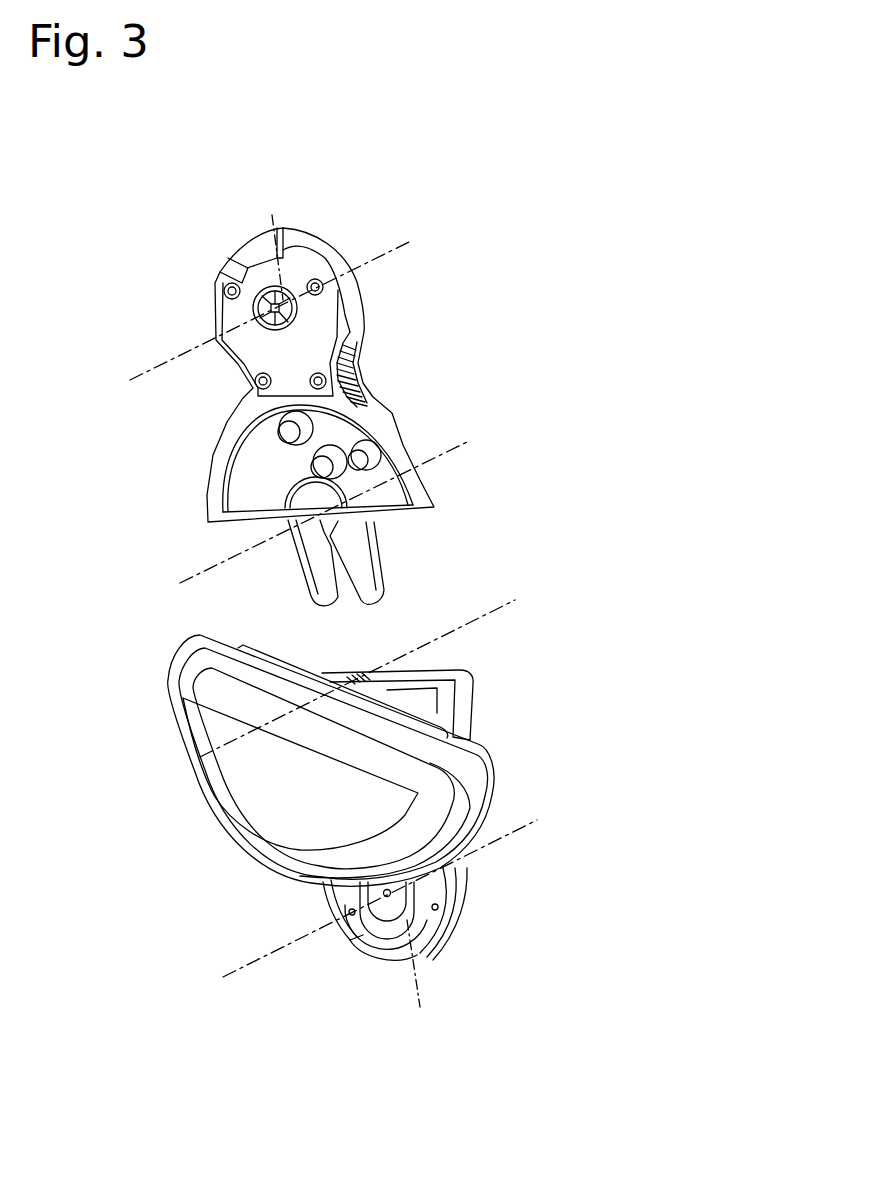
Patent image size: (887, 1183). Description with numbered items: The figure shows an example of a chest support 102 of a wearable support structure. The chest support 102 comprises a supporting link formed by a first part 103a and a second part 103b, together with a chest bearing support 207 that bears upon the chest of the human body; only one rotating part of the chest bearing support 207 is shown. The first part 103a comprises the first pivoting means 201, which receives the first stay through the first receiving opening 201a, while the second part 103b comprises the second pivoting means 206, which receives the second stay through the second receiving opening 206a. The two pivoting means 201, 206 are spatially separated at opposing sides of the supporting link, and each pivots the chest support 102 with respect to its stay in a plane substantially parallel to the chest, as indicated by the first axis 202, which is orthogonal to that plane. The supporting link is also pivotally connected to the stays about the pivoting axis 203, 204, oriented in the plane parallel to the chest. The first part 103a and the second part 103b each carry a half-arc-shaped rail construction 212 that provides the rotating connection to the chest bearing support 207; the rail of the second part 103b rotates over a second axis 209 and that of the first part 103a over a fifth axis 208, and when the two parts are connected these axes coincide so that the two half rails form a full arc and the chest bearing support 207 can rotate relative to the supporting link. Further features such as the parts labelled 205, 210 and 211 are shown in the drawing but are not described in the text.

The chest support 102 is at (568, 802).
The first part 103a is at (448, 330).
The second part 103b is at (522, 738).
The first pivoting means 201 is at (255, 305).
The first receiving opening 201a is at (233, 250).
The first axis 202 is at (424, 238).
The pivoting axis 203 is at (267, 207).
The pivoting axis 204 is at (416, 1002).
The hinge pin axis 205 is at (288, 945).
The second pivoting means 206 is at (402, 902).
The second receiving opening 206a is at (375, 960).
The chest bearing support 207 is at (247, 788).
The fifth axis 208 is at (475, 432).
The second axis 209 is at (467, 623).
The flange rim 210 is at (407, 537).
The ramp 211 is at (363, 660).
The half-arc-shaped rail construction 212 is at (425, 704).